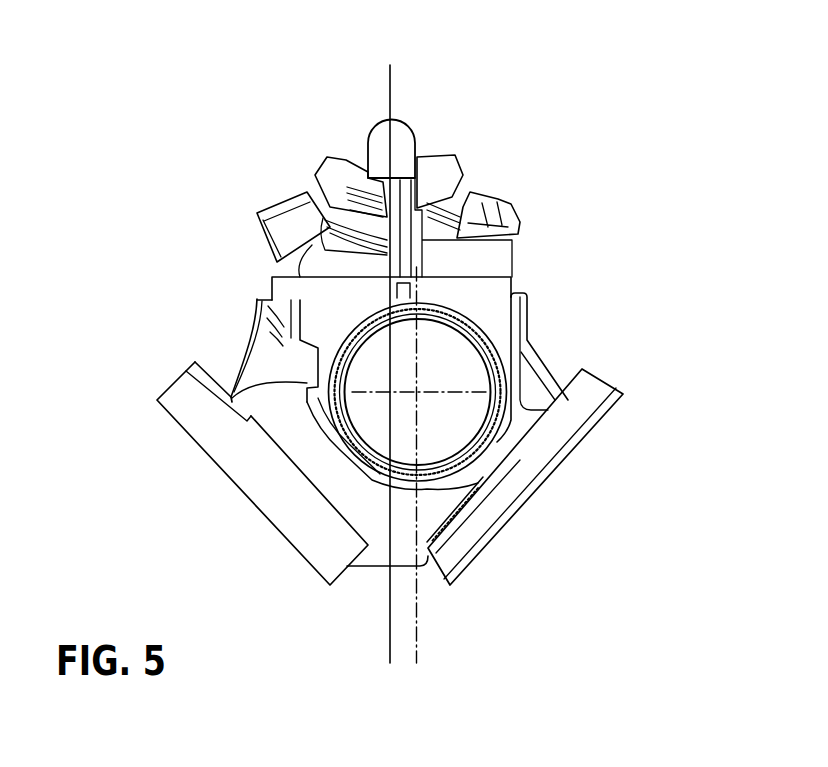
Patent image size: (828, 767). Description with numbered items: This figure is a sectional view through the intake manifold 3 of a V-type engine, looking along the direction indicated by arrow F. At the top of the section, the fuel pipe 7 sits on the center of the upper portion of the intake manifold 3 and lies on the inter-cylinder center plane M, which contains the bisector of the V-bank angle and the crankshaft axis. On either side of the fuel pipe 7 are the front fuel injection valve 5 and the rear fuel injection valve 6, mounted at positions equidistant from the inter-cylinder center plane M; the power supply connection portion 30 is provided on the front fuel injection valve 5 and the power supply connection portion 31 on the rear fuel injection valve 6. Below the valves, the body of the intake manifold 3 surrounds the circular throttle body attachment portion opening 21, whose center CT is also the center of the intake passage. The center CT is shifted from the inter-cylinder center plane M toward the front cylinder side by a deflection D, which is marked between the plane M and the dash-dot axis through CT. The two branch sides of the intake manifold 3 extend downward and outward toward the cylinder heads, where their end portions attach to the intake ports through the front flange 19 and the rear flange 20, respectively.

The intake manifold 3 is at (170, 297).
The front fuel injection valve 5 is at (427, 165).
The rear fuel injection valve 6 is at (358, 178).
The fuel pipe 7 is at (358, 147).
The front flange 19 is at (563, 423).
The rear flange 20 is at (223, 445).
The throttle body attachment portion opening 21 is at (499, 329).
The power supply connection portion 30 is at (480, 207).
The power supply connection portion 31 is at (298, 223).
The inter-cylinder center plane M is at (390, 86).
The center of intake passage CT is at (416, 392).
The deflection D is at (353, 625).
The direction of displacement F is at (443, 39).